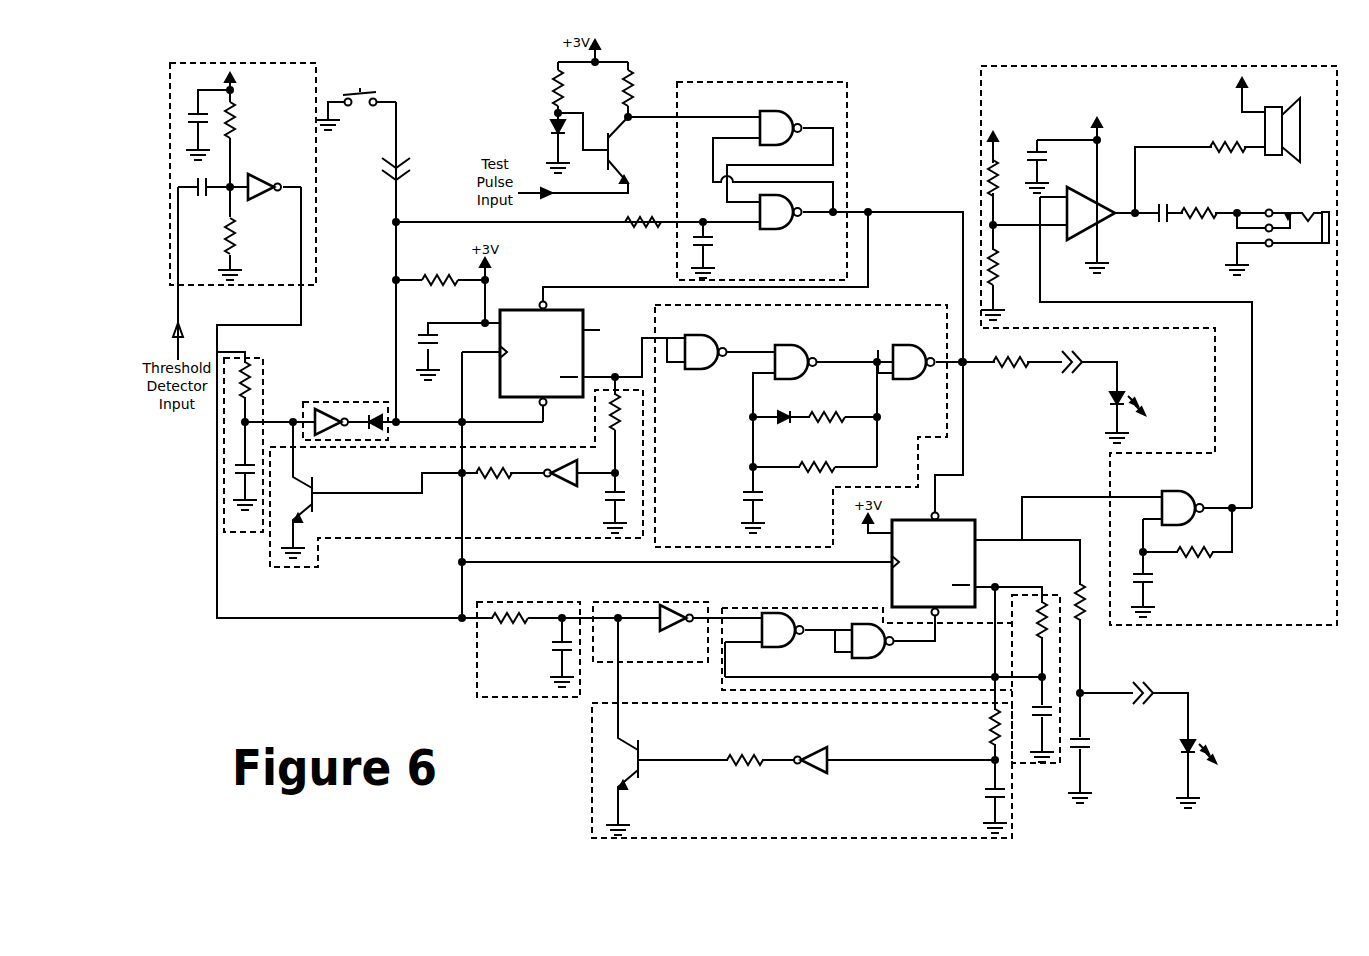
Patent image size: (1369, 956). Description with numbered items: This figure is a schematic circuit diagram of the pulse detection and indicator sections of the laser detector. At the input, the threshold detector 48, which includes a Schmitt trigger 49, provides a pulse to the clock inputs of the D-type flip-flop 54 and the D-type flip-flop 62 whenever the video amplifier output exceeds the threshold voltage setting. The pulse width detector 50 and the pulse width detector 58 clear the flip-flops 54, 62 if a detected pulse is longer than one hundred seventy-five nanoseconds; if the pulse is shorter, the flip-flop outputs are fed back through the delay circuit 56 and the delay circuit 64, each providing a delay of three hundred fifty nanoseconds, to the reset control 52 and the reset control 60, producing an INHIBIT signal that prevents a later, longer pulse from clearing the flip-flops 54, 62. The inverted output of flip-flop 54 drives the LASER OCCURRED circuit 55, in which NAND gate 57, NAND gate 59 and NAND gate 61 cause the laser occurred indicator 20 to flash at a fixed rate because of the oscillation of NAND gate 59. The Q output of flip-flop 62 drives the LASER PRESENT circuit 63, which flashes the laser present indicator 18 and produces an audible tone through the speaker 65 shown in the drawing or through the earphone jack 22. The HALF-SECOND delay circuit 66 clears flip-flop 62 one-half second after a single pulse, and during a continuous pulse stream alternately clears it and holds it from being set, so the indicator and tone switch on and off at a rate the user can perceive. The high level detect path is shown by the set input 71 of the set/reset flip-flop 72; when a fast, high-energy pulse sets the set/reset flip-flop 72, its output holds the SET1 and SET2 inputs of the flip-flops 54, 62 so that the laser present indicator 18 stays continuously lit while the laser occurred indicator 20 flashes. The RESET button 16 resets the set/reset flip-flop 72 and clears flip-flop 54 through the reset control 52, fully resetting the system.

The RESET button 16 is at (350, 94).
The laser present indicator 18 is at (1185, 741).
The laser occurred indicator 20 is at (1107, 396).
The earphone jack 22 is at (1307, 246).
The threshold detector 48 is at (269, 174).
The Schmitt trigger 49 is at (271, 178).
The pulse width detector 50 is at (266, 396).
The reset control 52 is at (374, 402).
The D-type flip-flop 54 is at (527, 306).
The LASER OCCURRED circuit 55 is at (801, 399).
The delay circuit 56 is at (405, 540).
The NAND gate 57 is at (701, 370).
The pulse width detector 58 is at (477, 655).
The NAND gate 59 is at (809, 350).
The reset control 60 is at (691, 602).
The NAND gate 61 is at (925, 350).
The D-type flip-flop 62 is at (961, 520).
The LASER PRESENT circuit 63 is at (1160, 380).
The delay circuit 64 is at (592, 778).
The speaker 65 is at (1292, 162).
The HALF-SECOND delay circuit 66 is at (860, 608).
The set input 71 is at (649, 222).
The set/reset flip-flop 72 is at (792, 82).